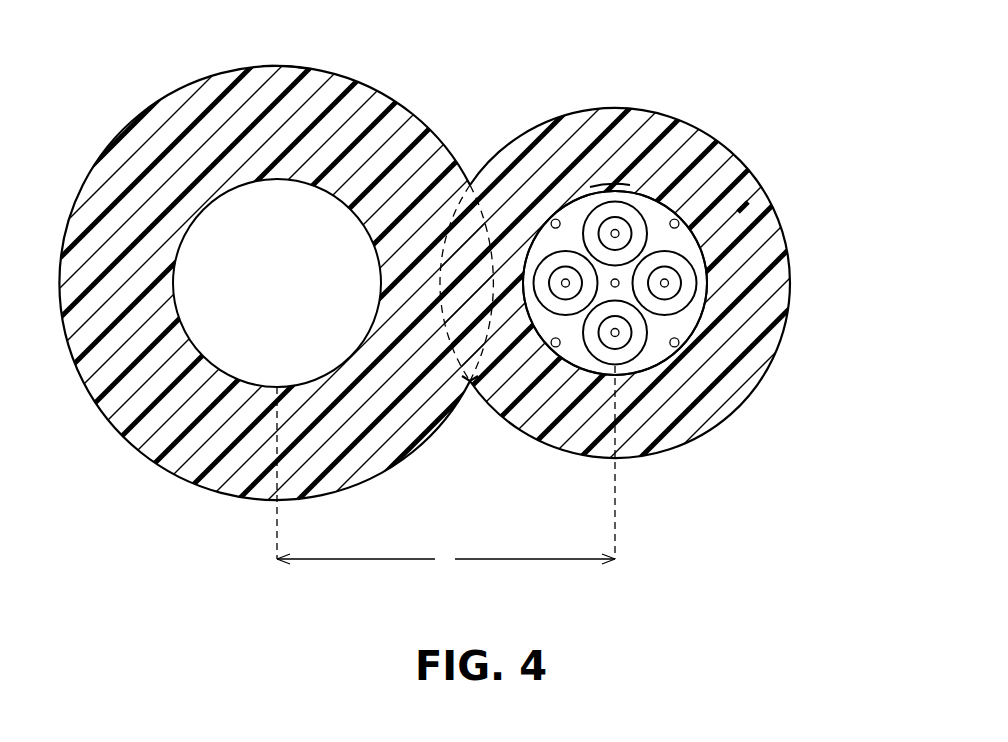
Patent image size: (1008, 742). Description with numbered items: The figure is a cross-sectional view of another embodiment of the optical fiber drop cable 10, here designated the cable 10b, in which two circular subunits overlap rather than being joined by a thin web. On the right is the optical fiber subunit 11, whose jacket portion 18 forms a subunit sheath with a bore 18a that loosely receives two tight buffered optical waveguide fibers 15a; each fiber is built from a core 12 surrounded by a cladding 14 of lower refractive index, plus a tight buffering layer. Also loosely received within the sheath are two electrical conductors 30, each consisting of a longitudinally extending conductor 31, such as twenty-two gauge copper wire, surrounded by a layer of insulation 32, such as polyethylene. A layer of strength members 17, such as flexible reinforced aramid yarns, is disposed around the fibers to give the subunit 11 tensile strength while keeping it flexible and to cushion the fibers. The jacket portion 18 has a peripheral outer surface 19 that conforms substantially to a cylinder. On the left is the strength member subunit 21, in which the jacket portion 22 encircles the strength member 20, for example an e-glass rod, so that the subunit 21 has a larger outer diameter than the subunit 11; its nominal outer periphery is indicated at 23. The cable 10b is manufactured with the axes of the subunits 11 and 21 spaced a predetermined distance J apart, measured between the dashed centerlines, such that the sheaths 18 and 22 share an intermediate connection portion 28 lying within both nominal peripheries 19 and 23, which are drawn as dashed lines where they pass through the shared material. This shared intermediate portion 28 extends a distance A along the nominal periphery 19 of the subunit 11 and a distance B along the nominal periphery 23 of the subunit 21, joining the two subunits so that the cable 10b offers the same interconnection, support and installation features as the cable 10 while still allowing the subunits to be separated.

The optical fiber drop cable 10 is at (444, 55).
The cable 10b is at (432, 590).
The optical fiber subunit 11 is at (661, 455).
The core 12 is at (678, 346).
The cladding 14 is at (700, 323).
The tight buffered optical waveguide fibers 15a is at (704, 261).
The strength members 17 is at (552, 212).
The jacket portion 18 is at (680, 130).
The bore 18a is at (743, 207).
The peripheral outer surface 19 is at (607, 188).
The strength member 20 is at (290, 265).
The strength member subunit 21 is at (204, 71).
The jacket portion 22 is at (307, 90).
The nominal outer periphery 23 is at (288, 65).
The intermediate connection portion 28 is at (472, 383).
The electrical conductors 30 is at (640, 213).
The conductor 31 is at (616, 229).
The insulation 32 is at (640, 225).
The distance A is at (455, 207).
The distance B is at (487, 243).
The predetermined distance J is at (446, 468).